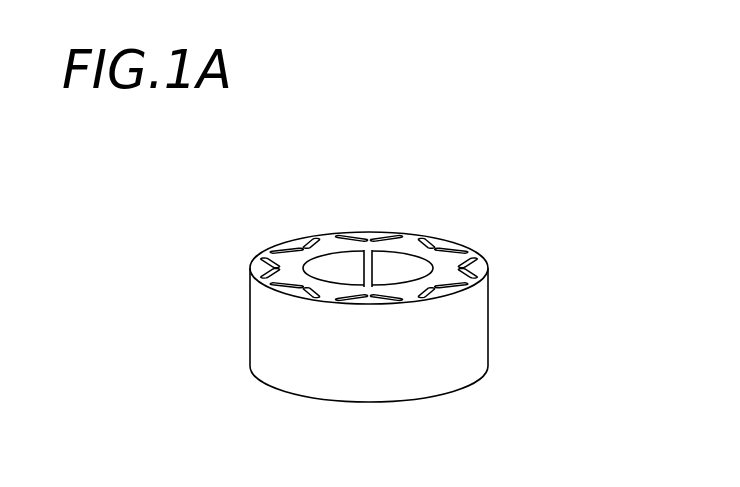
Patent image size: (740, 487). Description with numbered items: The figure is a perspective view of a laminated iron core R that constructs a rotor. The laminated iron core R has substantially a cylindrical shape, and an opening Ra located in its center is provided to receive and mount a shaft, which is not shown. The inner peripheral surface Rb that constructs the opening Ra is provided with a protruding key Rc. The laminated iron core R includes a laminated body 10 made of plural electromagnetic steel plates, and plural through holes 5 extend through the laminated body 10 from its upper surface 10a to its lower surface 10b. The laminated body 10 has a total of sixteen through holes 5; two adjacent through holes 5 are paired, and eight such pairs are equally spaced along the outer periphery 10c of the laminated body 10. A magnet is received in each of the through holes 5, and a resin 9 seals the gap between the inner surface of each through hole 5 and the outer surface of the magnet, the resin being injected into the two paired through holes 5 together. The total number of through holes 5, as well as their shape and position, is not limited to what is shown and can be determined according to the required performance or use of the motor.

The laminated iron core R is at (519, 193).
The laminated body 10 is at (504, 321).
The upper surface 10a is at (481, 254).
The lower surface 10b is at (453, 375).
The outer periphery 10c is at (280, 335).
The through holes 5 is at (426, 242).
The resin 9 is at (385, 238).
The opening Ra is at (397, 268).
The inner peripheral surface Rb is at (332, 267).
The key Rc is at (364, 268).